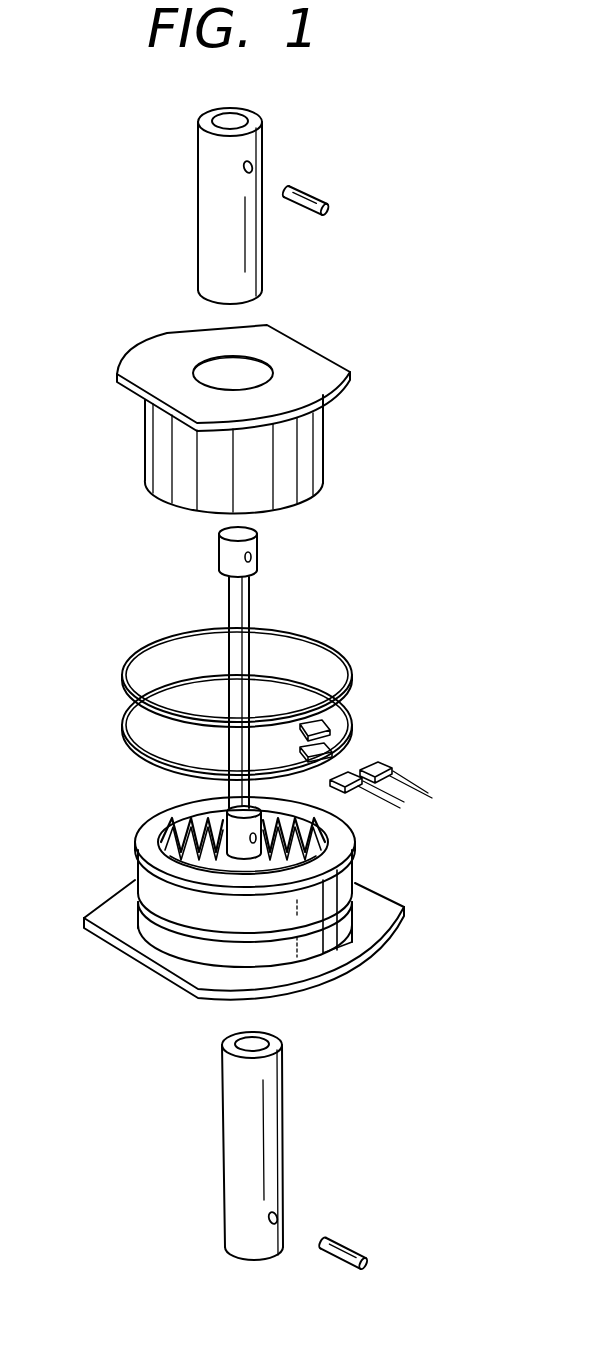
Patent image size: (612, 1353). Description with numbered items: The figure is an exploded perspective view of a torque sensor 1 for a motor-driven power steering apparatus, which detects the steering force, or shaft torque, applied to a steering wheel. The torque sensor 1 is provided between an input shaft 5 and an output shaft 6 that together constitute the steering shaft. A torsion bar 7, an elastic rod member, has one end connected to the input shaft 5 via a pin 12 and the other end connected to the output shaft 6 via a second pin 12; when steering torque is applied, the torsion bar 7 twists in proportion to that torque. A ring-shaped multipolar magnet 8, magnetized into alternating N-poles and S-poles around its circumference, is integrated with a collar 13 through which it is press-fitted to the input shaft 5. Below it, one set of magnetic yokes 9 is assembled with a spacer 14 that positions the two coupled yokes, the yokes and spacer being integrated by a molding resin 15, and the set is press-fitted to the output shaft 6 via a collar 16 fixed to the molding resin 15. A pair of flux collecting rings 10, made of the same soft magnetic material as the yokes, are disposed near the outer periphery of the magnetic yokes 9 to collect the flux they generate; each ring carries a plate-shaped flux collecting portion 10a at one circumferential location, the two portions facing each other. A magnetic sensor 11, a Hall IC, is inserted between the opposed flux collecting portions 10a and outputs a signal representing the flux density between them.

The torque sensor 1 is at (405, 322).
The input shaft 5 is at (210, 208).
The output shaft 6 is at (230, 1145).
The torsion bar 7 is at (240, 600).
The multipolar magnet 8 is at (322, 442).
The magnetic yokes 9 is at (137, 828).
The flux collecting rings 10 is at (123, 728).
The flux collecting portion 10a is at (345, 740).
The magnetic sensor 11 is at (390, 764).
The pin 12 is at (306, 187).
The collar 13 is at (298, 358).
The spacer 14 is at (353, 870).
The molding resin 15 is at (177, 948).
The collar 16 is at (395, 927).